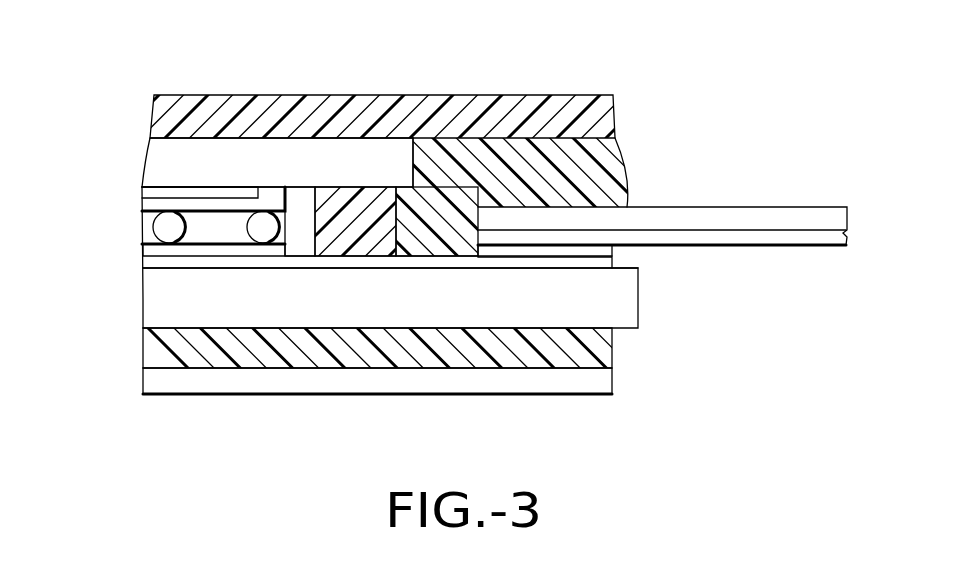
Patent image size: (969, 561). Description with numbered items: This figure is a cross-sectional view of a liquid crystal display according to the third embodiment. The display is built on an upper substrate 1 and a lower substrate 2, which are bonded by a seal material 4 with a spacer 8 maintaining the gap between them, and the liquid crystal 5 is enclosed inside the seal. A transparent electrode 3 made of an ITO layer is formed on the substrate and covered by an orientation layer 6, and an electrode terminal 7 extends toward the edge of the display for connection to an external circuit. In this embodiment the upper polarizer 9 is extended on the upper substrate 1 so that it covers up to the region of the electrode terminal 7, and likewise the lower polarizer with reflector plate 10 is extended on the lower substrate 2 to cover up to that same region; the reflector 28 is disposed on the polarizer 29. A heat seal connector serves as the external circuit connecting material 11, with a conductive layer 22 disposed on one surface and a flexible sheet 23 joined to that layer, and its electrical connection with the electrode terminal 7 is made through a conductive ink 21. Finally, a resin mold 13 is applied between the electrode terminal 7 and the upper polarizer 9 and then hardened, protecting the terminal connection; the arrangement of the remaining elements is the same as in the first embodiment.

The upper substrate 1 is at (385, 155).
The lower substrate 2 is at (640, 300).
The transparent electrode 3 is at (150, 193).
The seal material 4 is at (366, 257).
The liquid crystal 5 is at (302, 256).
The orientation layer 6 is at (145, 203).
The electrode terminal 7 is at (520, 262).
The spacer 8 is at (263, 233).
The upper polarizer 9 is at (613, 120).
The lower polarizer with reflector plate 10 is at (543, 396).
The external circuit connecting material 11 is at (820, 207).
The resin mold 13 is at (627, 177).
The conductive ink 21 is at (620, 252).
The conductive layer 22 is at (798, 240).
The flexible sheet 23 is at (770, 217).
The reflector 28 is at (605, 378).
The polarizer 29 is at (612, 345).